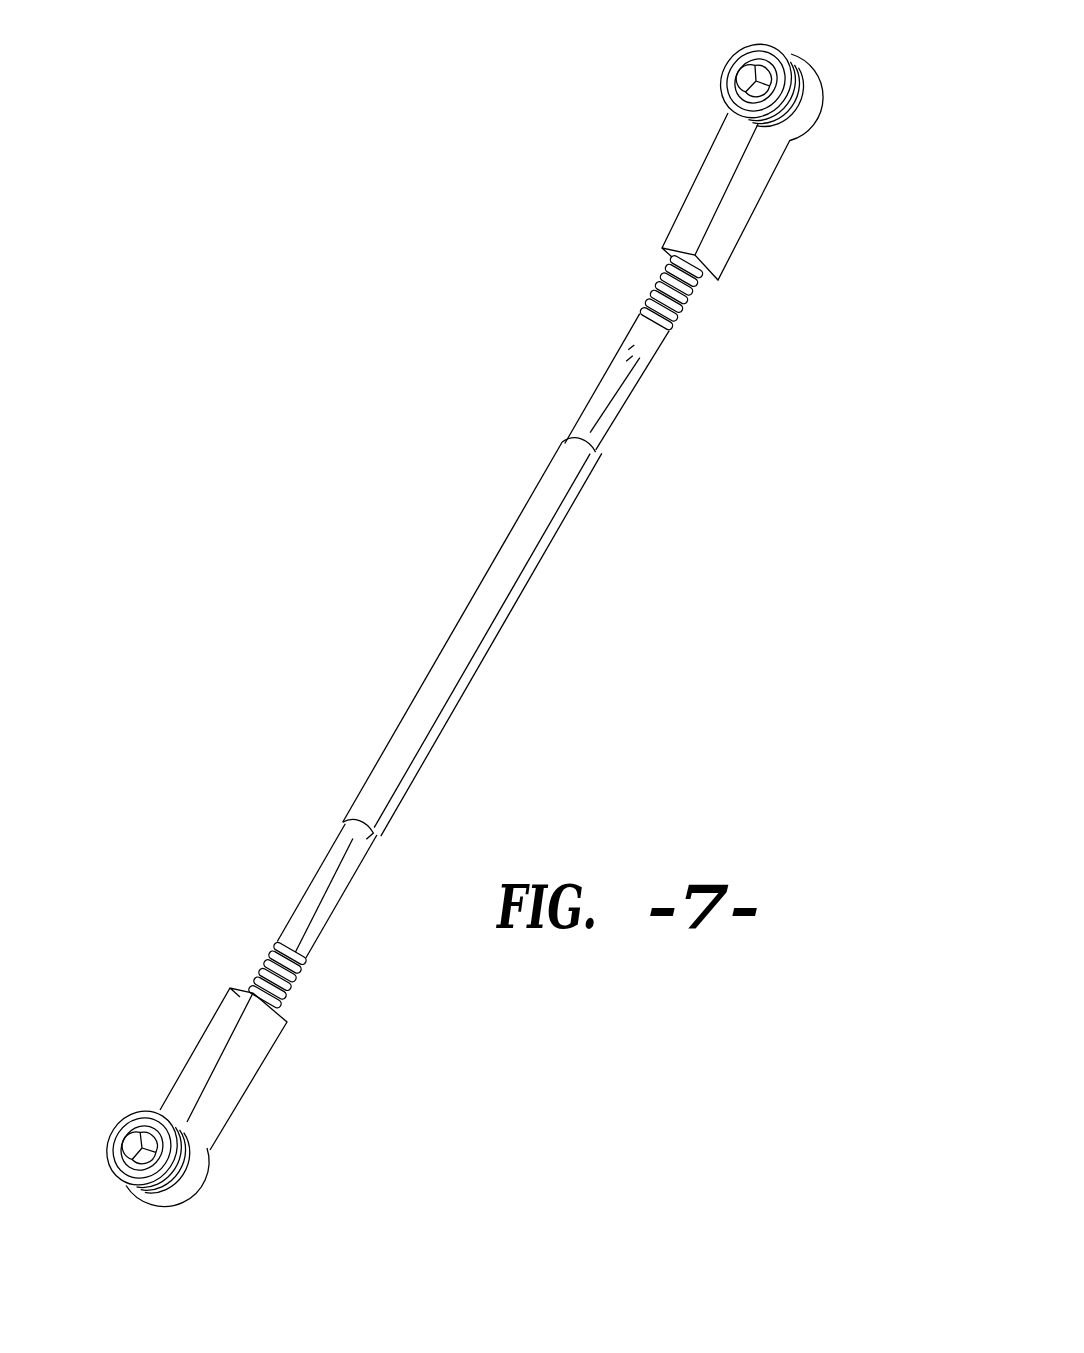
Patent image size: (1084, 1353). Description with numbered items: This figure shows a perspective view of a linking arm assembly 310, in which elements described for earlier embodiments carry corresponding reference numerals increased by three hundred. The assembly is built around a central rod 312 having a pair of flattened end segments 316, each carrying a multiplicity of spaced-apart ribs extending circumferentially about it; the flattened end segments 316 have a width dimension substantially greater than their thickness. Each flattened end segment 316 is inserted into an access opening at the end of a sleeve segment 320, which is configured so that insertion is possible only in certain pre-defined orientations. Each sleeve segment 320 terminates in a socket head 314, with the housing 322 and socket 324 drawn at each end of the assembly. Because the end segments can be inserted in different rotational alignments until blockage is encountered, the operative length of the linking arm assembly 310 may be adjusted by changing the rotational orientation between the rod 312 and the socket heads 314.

The linking arm assembly 310 is at (418, 422).
The rod 312 is at (515, 607).
The socket head 314 is at (822, 88).
The flattened end segment 316 is at (687, 302).
The sleeve segment 320 is at (747, 231).
The housing 322 is at (809, 131).
The socket head 324 is at (733, 68).